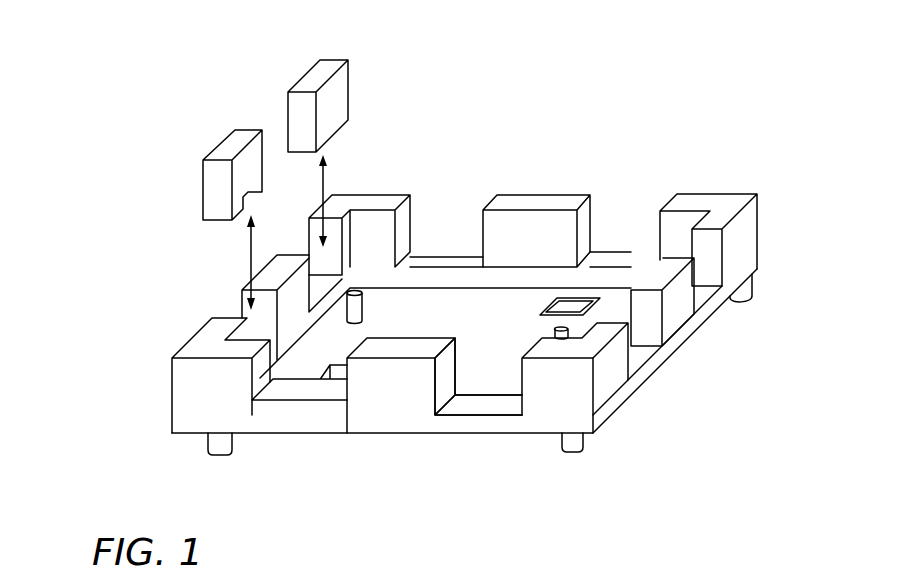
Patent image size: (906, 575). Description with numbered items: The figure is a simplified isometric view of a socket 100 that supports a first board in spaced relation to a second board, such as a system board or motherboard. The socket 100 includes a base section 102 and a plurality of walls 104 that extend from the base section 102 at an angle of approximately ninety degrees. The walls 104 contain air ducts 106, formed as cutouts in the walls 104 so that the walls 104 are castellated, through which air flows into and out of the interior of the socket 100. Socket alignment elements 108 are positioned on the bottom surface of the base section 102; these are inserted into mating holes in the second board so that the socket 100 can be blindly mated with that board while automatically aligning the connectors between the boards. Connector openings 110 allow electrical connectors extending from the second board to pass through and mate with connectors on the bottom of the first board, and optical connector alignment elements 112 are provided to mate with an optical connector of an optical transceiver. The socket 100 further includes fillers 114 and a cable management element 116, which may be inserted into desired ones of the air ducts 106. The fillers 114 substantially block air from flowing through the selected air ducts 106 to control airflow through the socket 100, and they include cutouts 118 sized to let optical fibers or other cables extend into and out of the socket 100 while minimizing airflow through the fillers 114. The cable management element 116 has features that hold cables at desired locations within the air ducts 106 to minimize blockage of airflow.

The socket 100 is at (603, 52).
The base section 102 is at (464, 356).
The walls 104 is at (712, 297).
The air ducts 106 is at (499, 428).
The socket alignment elements 108 is at (480, 411).
The connector openings 110 is at (630, 201).
The optical connector alignment elements 112 is at (431, 194).
The fillers 114 is at (248, 152).
The cable management element 116 is at (154, 370).
The cutouts 118 is at (188, 220).